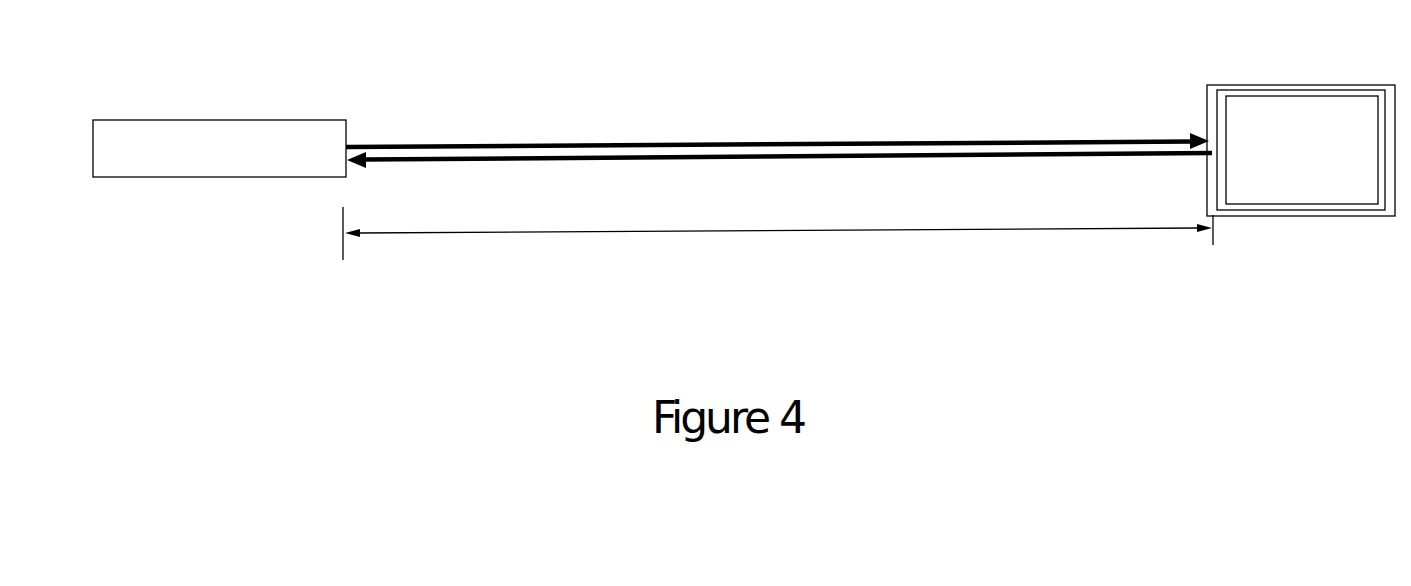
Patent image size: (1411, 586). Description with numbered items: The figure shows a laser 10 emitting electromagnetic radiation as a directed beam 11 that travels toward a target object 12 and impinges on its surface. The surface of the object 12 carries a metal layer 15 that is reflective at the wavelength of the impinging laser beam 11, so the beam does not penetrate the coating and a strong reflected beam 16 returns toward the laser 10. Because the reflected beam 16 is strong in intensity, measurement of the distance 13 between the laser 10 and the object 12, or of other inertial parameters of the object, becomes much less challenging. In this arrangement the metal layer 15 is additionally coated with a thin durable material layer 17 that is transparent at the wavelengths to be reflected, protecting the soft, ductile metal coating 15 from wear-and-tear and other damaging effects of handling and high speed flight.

The laser 10 is at (301, 120).
The laser beam 11 is at (677, 140).
The target object 12 is at (1307, 105).
The distance 13 is at (983, 231).
The metal layer 15 is at (1220, 115).
The reflected beam 16 is at (517, 162).
The thin durable material layer 17 is at (1320, 216).